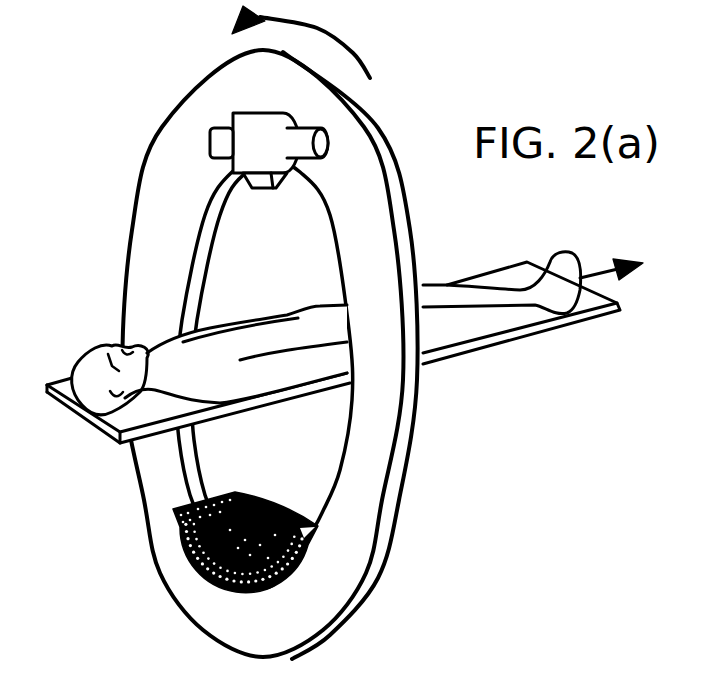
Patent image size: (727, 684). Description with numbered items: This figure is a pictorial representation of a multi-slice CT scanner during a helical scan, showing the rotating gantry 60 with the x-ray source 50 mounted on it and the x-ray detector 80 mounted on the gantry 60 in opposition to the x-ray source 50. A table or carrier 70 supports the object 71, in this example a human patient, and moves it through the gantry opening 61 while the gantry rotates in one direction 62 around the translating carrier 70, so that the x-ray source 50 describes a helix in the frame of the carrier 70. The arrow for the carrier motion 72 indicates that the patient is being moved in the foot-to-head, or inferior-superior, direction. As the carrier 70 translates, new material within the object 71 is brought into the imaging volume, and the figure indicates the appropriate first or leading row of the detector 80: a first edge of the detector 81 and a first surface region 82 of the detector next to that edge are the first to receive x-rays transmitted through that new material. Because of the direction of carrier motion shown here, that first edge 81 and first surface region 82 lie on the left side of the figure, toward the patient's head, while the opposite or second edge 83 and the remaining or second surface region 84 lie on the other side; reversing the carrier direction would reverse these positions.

The x-ray source 50 is at (210, 143).
The rotating gantry 60 is at (180, 103).
The gantry opening 61 is at (225, 252).
The gantry rotation direction 62 is at (282, 41).
The carrier 70 is at (110, 436).
The object 71 is at (88, 354).
The carrier translation direction 72 is at (620, 256).
The x-ray detector 80 is at (307, 552).
The first edge of the detector 81 is at (200, 563).
The first surface region 82 is at (188, 507).
The second edge 83 is at (257, 525).
The second surface region 84 is at (233, 493).